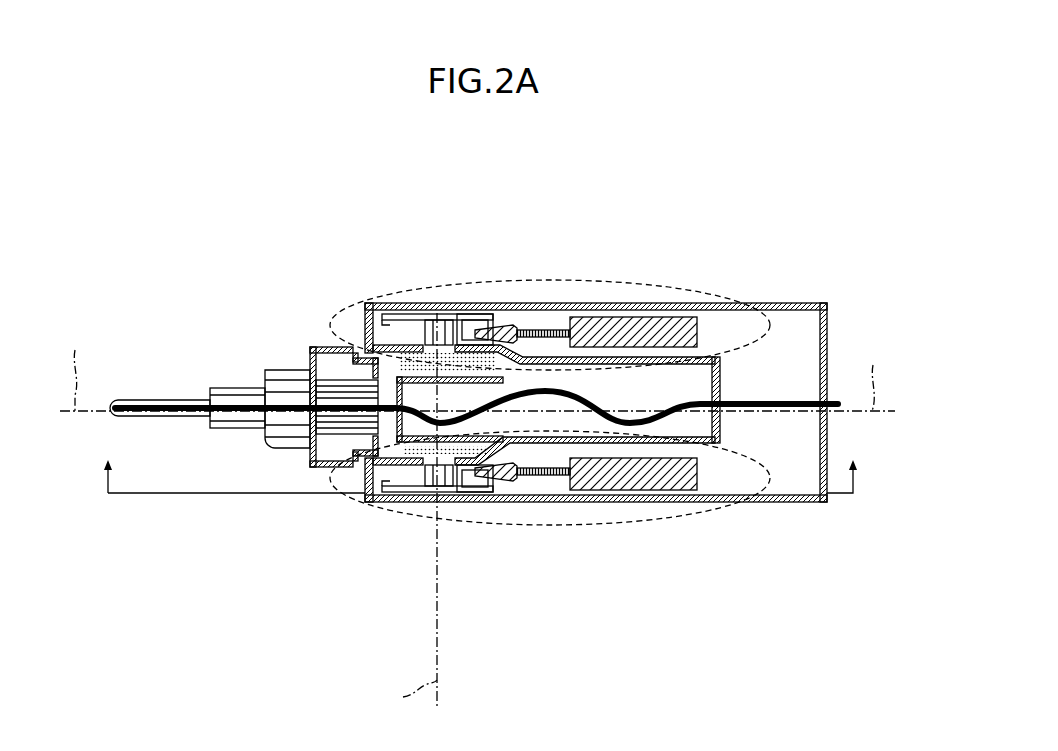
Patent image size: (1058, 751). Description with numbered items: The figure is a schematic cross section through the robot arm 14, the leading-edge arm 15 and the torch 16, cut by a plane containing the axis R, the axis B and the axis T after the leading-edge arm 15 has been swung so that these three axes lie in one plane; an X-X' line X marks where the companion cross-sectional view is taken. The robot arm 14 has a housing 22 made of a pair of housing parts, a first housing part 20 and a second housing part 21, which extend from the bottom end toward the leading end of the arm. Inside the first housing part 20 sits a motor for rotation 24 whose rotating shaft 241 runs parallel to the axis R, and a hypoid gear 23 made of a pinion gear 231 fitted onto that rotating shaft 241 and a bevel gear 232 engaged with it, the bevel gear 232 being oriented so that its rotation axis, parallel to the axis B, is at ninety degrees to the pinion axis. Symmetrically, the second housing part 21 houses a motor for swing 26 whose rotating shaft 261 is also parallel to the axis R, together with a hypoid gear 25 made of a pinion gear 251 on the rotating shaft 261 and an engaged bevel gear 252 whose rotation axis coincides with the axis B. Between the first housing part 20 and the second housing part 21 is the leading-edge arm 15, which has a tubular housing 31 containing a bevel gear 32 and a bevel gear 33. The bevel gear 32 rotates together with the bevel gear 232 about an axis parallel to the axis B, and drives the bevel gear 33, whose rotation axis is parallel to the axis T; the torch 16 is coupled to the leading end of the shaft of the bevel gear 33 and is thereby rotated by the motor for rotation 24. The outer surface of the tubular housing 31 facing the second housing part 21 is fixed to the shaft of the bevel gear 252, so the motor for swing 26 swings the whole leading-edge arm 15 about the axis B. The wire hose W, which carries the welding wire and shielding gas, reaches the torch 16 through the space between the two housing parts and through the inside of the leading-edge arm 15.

The robot arm 14 is at (705, 178).
The leading-edge arm 15 is at (328, 288).
The torch 16 is at (233, 393).
The first housing part 20 is at (720, 292).
The second housing part 21 is at (710, 522).
The housing 22 is at (788, 303).
The hypoid gear 23 is at (523, 195).
The pinion gear 231 is at (508, 327).
The bevel gear 232 is at (440, 318).
The motor for rotation 24 is at (630, 325).
The rotating shaft 241 is at (540, 330).
The hypoid gear 25 is at (557, 623).
The pinion gear 251 is at (508, 482).
The bevel gear 252 is at (441, 487).
The motor for swing 26 is at (630, 488).
The rotating shaft 261 is at (554, 480).
The tubular housing 31 is at (330, 387).
The bevel gear 32 is at (387, 367).
The bevel gear 33 is at (318, 366).
The wire hose W is at (782, 398).
The axis T is at (75, 367).
The axis R is at (873, 375).
The X-X' line X is at (485, 465).
The axis B is at (411, 511).